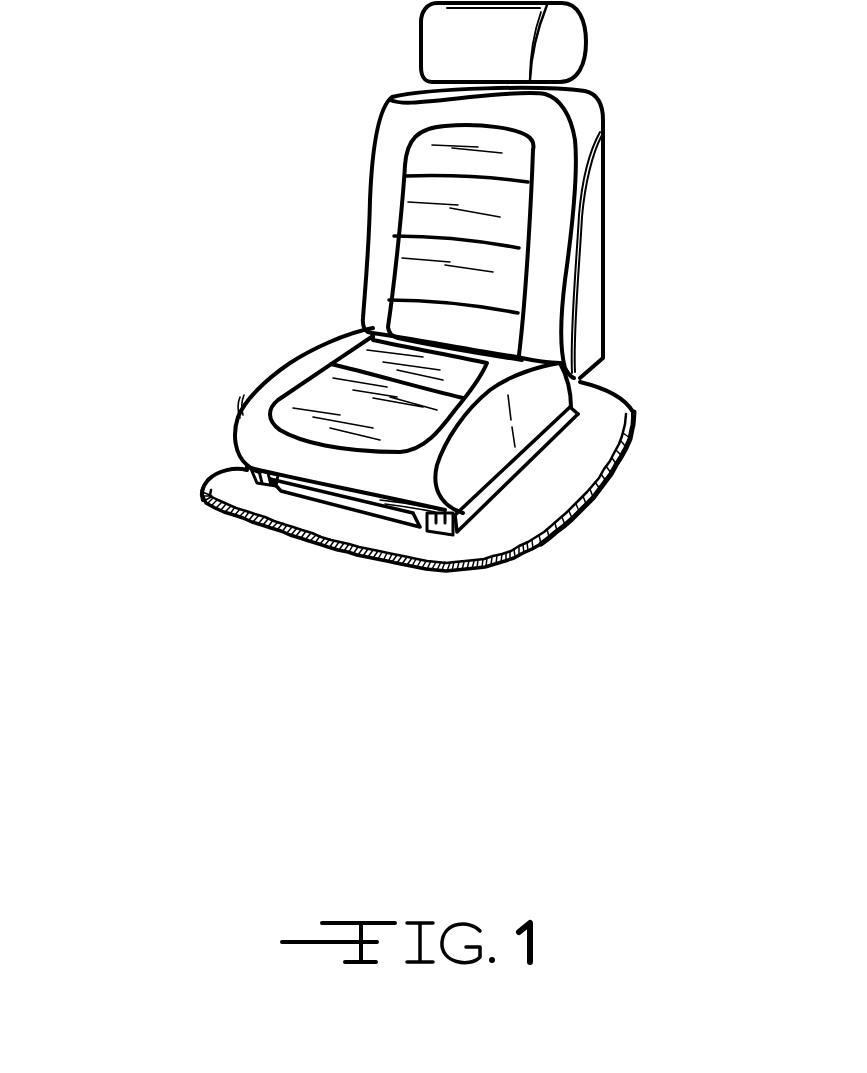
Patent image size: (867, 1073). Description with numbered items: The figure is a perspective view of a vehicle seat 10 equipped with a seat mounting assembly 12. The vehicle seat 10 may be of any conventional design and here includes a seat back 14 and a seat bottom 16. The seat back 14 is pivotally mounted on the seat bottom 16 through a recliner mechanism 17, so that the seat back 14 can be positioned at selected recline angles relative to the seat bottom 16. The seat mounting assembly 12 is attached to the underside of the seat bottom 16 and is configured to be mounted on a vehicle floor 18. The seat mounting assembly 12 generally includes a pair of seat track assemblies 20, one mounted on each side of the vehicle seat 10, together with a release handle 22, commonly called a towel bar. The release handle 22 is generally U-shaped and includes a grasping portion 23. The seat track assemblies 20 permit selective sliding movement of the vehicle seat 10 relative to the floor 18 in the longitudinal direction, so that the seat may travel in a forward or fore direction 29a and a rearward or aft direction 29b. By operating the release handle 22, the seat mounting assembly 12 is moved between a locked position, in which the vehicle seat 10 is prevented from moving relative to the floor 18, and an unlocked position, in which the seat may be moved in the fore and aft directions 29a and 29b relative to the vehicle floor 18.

The vehicle seat 10 is at (288, 131).
The seat mounting assembly 12 is at (434, 545).
The seat back 14 is at (590, 181).
The seat bottom 16 is at (313, 380).
The recliner mechanism 17 is at (593, 375).
The vehicle floor 18 is at (603, 408).
The seat track assemblies 20 is at (245, 467).
The release handle 22 is at (347, 517).
The grasping portion 23 is at (293, 508).
The fore direction 29a is at (480, 482).
The aft direction 29b is at (547, 425).